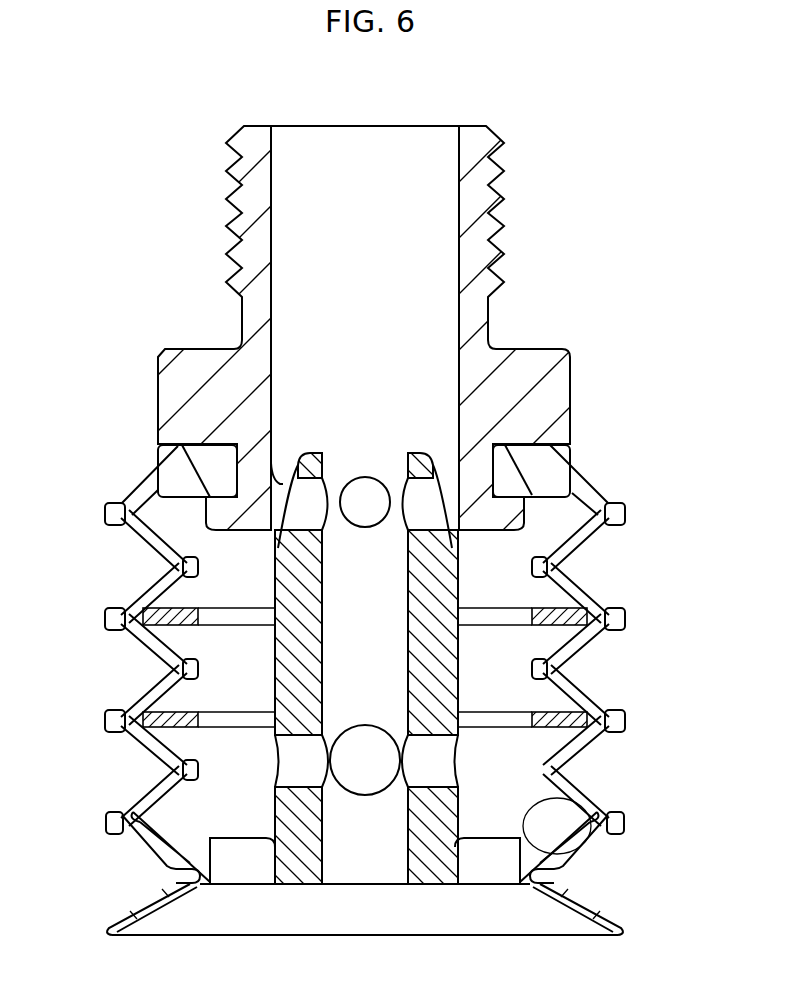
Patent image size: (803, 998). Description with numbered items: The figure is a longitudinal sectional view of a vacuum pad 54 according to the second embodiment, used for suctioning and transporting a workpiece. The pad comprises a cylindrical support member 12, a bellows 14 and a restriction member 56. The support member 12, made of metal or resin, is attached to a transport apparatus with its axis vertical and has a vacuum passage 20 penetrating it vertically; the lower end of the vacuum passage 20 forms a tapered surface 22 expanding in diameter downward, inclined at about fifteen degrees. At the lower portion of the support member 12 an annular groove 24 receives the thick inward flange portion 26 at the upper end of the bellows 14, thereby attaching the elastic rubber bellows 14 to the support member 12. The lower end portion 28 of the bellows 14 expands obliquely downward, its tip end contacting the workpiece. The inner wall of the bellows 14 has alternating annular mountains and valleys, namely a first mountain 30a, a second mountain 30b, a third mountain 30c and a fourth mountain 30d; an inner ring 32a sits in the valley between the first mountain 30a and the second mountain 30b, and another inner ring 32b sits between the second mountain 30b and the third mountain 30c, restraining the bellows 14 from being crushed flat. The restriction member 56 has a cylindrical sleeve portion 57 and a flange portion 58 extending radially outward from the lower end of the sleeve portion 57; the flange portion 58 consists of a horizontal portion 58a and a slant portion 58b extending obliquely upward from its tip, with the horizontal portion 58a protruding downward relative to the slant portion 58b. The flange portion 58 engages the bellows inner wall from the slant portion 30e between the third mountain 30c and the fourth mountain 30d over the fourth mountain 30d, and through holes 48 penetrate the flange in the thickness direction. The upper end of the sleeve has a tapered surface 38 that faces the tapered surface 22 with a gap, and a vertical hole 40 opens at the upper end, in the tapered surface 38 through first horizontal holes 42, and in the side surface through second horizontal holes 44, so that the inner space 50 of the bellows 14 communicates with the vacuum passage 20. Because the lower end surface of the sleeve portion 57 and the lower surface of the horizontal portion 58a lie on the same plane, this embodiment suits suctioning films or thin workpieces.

The support member 12 is at (212, 190).
The bellows 14 is at (89, 607).
The vacuum passage 20 is at (372, 140).
The tapered surface 22 is at (275, 483).
The annular groove 24 is at (233, 470).
The inward flange portion 26 is at (540, 472).
The lower end portion 28 is at (610, 923).
The first mountain 30a is at (190, 568).
The second mountain 30b is at (190, 671).
The third mountain 30c is at (185, 777).
The fourth mountain 30d is at (185, 881).
The slant portion 30e is at (140, 858).
The inner ring 32a is at (565, 617).
The inner ring 32b is at (566, 717).
The tapered surface 38 is at (440, 497).
The vertical hole 40 is at (330, 576).
The first horizontal holes 42 is at (413, 490).
The second horizontal holes 44 is at (433, 757).
The through holes 48 is at (245, 858).
The inner space 50 is at (190, 700).
The vacuum pad 54 is at (149, 114).
The restriction member 56 is at (270, 653).
The sleeve portion 57 is at (440, 575).
The flange portion 58 is at (686, 790).
The horizontal portion 58a is at (548, 812).
The slant portion 58b is at (573, 836).